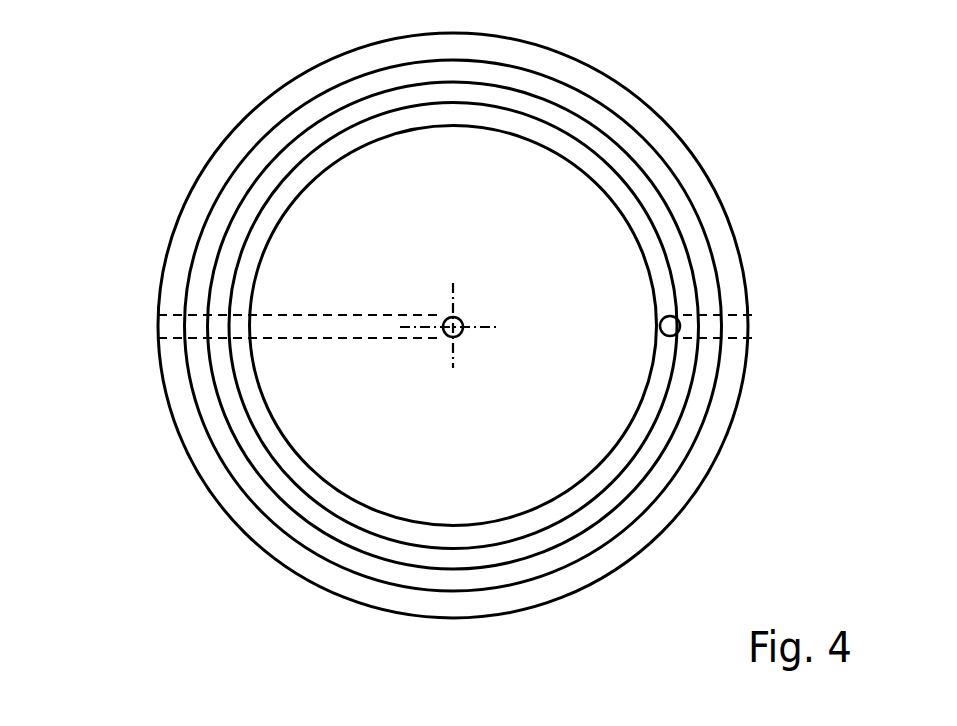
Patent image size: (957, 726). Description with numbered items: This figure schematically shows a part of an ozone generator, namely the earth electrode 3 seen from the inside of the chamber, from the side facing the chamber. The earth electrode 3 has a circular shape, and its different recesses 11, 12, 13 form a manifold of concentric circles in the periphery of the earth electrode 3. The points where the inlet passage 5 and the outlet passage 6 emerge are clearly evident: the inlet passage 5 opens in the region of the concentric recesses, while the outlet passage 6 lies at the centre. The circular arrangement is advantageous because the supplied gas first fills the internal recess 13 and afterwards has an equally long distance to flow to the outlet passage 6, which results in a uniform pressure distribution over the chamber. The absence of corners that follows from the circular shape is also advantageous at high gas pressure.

The earth electrode 3 is at (620, 82).
The recess 12 is at (655, 165).
The recess 11 is at (677, 250).
The internal recess 13 is at (562, 140).
The inlet passage 5 is at (660, 326).
The outlet passage 6 is at (160, 323).